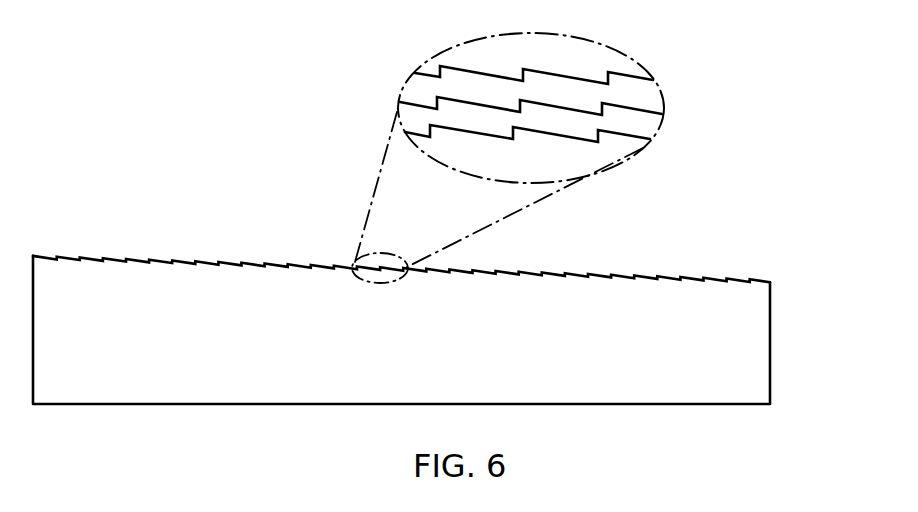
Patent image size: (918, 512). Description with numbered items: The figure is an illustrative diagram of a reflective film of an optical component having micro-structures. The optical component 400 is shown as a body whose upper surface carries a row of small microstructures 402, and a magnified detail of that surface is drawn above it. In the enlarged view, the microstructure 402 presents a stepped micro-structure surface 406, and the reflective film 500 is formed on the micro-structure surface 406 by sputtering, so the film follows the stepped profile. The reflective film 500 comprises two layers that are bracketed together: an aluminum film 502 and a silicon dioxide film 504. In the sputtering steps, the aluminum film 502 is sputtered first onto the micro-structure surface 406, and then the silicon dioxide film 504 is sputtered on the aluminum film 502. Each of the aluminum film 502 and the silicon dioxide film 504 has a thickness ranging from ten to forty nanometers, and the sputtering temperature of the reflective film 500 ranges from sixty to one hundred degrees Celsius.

The optical component 400 is at (760, 355).
The microstructure 402 is at (548, 142).
The micro-structure surface 406 is at (397, 116).
The reflective film 500 is at (753, 40).
The aluminum film 502 is at (648, 133).
The silicon dioxide film 504 is at (648, 96).